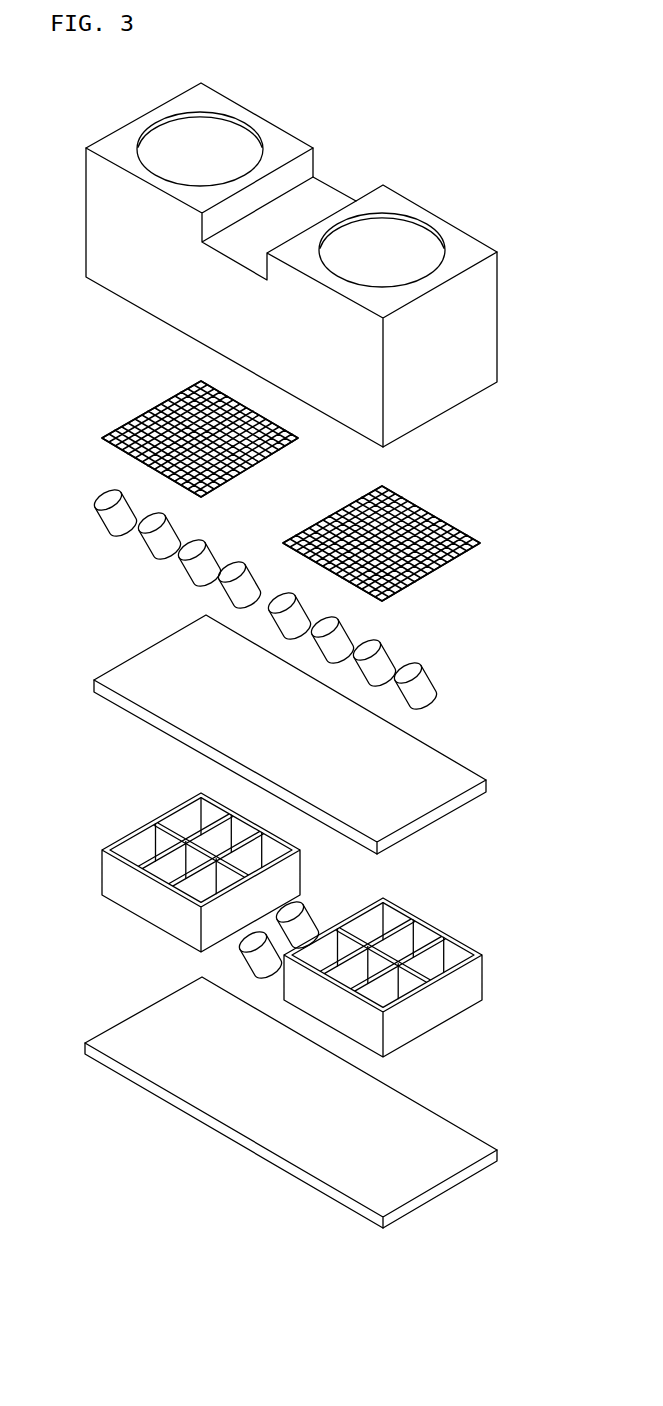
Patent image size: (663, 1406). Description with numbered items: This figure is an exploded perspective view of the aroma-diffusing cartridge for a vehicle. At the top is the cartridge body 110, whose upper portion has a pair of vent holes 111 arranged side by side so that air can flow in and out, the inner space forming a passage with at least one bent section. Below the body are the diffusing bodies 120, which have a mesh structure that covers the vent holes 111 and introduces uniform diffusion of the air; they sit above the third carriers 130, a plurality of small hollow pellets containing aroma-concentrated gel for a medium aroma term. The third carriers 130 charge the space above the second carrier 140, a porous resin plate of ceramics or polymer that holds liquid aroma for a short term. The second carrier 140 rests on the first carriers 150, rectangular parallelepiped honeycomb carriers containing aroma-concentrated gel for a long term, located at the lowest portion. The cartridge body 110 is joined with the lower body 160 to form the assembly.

The cartridge body 110 is at (480, 317).
The vent hole 111 is at (393, 235).
The diffusing body 120 is at (457, 522).
The third carrier 130 is at (420, 685).
The second carrier 140 is at (450, 770).
The first carrier 150 is at (470, 983).
The lower body 160 is at (442, 1195).